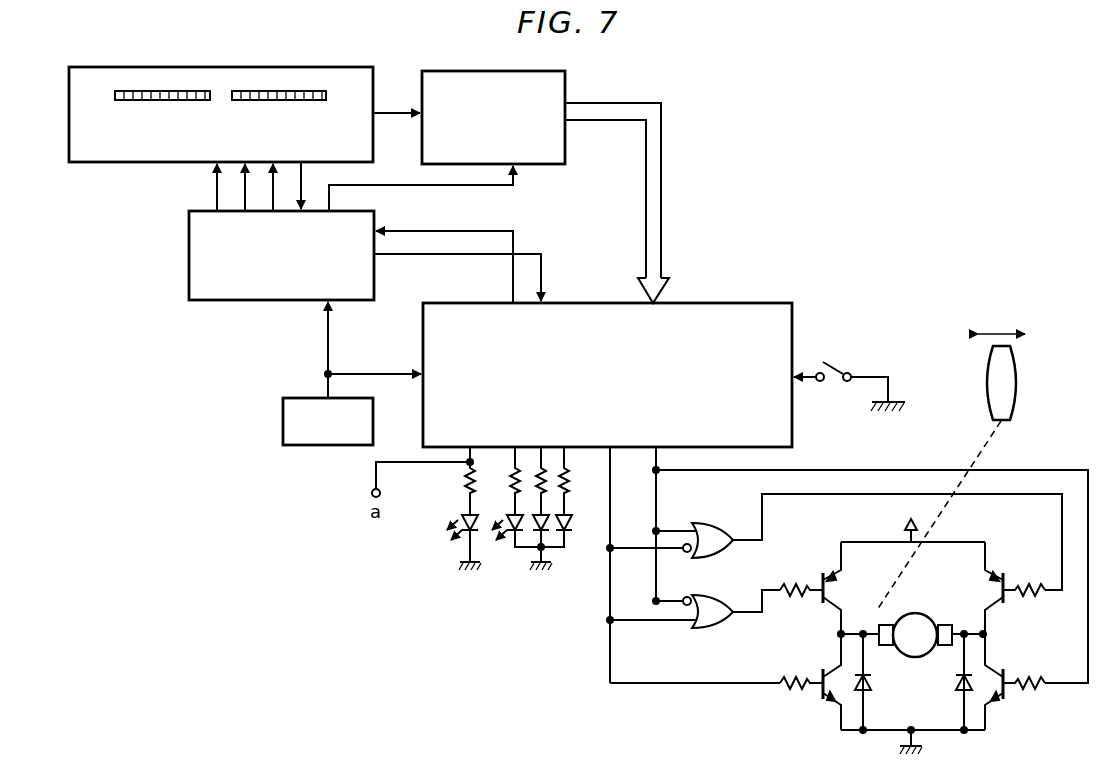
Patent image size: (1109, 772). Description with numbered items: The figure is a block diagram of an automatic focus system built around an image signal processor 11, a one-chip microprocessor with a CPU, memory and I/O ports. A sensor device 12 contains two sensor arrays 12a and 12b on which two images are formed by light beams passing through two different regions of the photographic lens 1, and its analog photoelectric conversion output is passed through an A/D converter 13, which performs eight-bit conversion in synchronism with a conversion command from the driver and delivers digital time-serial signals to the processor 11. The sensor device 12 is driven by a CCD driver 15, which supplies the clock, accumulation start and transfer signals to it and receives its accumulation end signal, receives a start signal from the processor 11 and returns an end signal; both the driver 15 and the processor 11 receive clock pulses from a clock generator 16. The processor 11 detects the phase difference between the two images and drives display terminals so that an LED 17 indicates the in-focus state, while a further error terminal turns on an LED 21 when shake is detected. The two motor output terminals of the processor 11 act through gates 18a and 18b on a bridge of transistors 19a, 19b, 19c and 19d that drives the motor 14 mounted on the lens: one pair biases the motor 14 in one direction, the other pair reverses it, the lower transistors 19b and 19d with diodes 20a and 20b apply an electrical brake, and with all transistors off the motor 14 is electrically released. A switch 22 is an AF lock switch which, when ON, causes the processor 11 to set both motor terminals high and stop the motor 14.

The lens 1 is at (1021, 375).
The image signal processor 11 is at (760, 302).
The sensor device 12 is at (83, 163).
The sensor array 12a is at (128, 101).
The sensor array 12b is at (245, 101).
The A/D converter 13 is at (551, 165).
The motor 14 is at (922, 624).
The CCD driver 15 is at (198, 302).
The clock generator 16 is at (293, 446).
The LED 17 is at (528, 546).
The gate 18a is at (707, 522).
The gate 18b is at (707, 629).
The transistor 19a is at (835, 572).
The transistor 19b is at (832, 700).
The transistor 19c is at (1003, 578).
The transistor 19d is at (1006, 702).
The diode 20a is at (874, 683).
The diode 20b is at (953, 683).
The LED 21 is at (451, 546).
The switch 22 is at (836, 368).